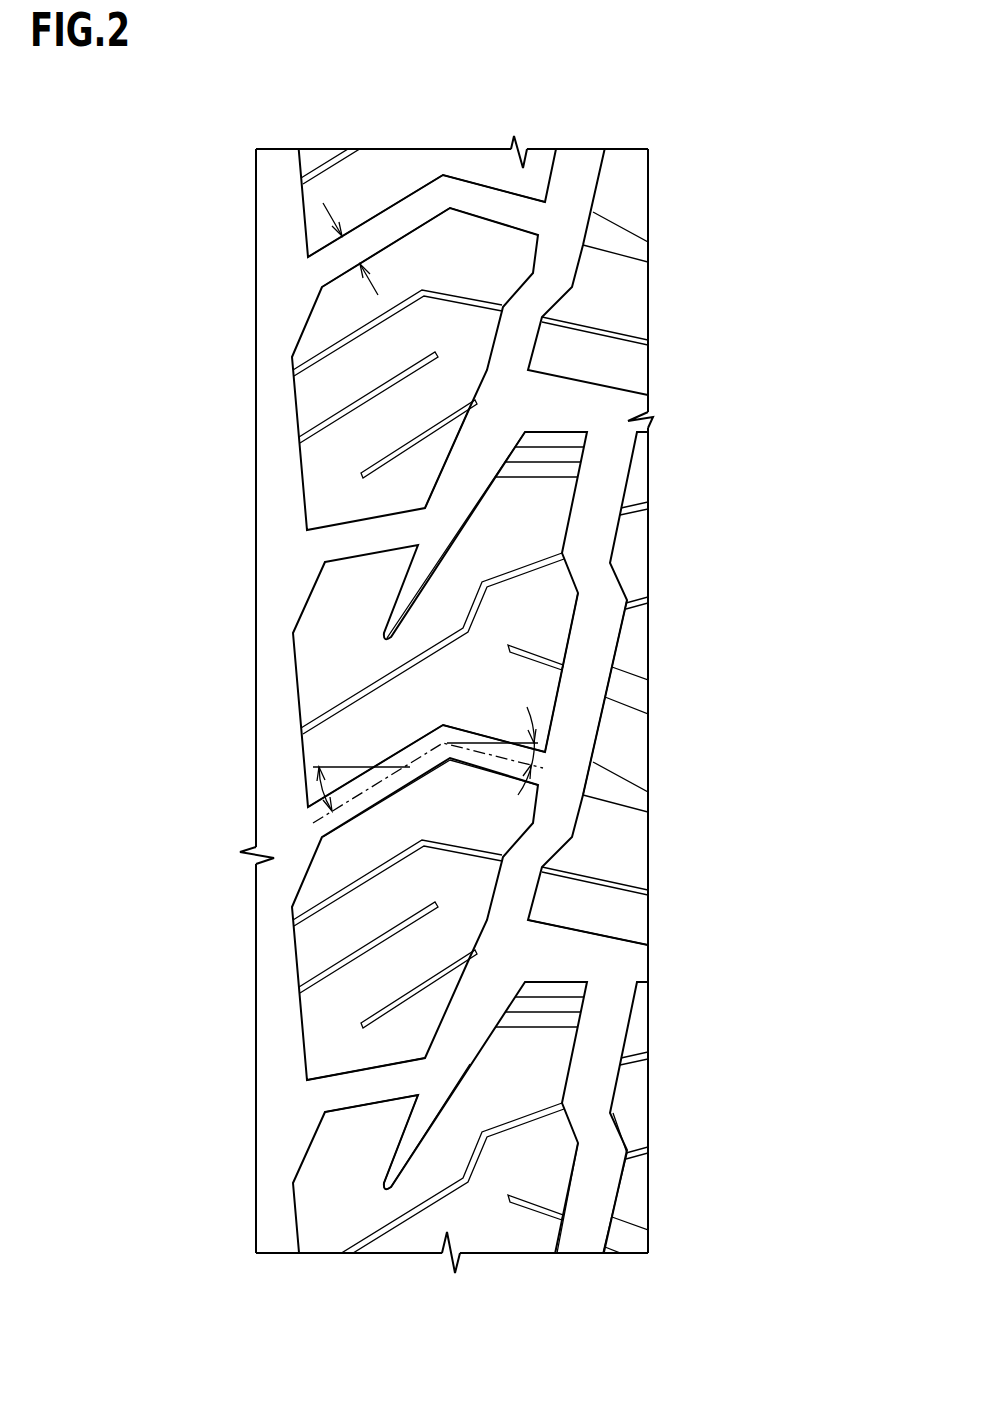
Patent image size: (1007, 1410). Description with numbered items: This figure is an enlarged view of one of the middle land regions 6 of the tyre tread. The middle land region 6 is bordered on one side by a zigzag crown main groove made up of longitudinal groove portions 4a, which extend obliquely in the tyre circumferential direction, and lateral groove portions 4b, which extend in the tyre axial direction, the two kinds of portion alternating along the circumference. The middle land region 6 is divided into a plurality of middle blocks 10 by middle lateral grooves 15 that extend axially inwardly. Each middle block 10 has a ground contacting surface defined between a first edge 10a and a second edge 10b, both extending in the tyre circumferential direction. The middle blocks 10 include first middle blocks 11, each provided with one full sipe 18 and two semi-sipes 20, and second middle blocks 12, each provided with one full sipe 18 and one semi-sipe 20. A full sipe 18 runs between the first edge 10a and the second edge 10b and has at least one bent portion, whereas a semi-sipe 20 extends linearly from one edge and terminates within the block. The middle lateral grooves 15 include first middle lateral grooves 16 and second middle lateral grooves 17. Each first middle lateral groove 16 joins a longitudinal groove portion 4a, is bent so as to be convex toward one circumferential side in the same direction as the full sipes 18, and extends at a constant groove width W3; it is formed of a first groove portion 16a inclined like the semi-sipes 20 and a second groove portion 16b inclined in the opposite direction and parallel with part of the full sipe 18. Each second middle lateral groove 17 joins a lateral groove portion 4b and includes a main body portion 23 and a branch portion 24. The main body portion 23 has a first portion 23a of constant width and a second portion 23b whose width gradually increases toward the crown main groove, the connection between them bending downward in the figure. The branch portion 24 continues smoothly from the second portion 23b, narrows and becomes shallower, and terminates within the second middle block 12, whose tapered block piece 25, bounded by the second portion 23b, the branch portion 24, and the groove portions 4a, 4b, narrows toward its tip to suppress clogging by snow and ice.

The middle land region 6 is at (388, 178).
The first edge 10a is at (297, 209).
The second edge 10b is at (556, 170).
The middle blocks 10 is at (454, 507).
The first middle blocks 11 is at (420, 943).
The second middle blocks 12 is at (514, 1169).
The middle lateral grooves 15 is at (552, 360).
The first middle lateral grooves 16 is at (564, 814).
The first groove portion 16a is at (373, 800).
The second groove portion 16b is at (487, 760).
The second middle lateral grooves 17 is at (255, 1078).
The full sipe 18 is at (330, 348).
The semi-sipe 20 is at (622, 643).
The main body portion 23 is at (275, 1039).
The first portion 23a is at (370, 1090).
The second portion 23b is at (457, 1048).
The branch portion 24 is at (410, 1143).
The tapered block piece 25 is at (520, 1063).
The longitudinal groove portions 4a is at (577, 723).
The lateral groove portions 4b is at (568, 962).
The groove width W3 is at (352, 262).